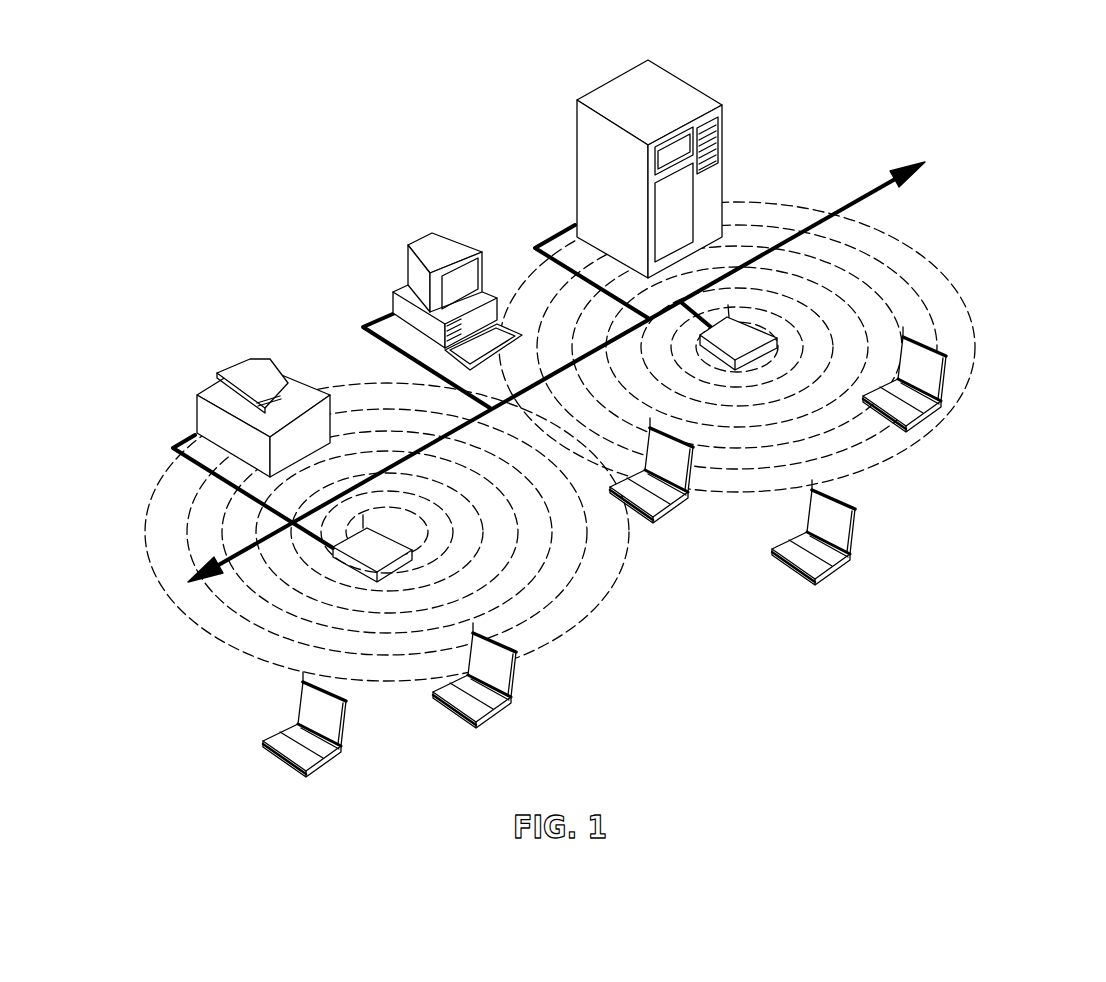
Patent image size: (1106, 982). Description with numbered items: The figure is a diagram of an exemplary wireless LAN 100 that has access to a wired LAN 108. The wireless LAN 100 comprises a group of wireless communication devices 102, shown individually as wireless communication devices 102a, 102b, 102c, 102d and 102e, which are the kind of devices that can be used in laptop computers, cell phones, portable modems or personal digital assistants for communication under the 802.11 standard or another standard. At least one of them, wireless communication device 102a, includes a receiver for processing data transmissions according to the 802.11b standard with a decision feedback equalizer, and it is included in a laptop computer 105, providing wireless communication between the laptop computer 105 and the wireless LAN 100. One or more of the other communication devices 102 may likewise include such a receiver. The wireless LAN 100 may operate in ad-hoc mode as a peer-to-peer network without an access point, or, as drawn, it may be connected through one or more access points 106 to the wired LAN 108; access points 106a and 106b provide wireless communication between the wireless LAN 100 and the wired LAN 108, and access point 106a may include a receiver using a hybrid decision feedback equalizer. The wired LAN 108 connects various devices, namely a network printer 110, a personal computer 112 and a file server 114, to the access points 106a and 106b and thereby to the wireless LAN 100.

The wireless LAN 100 is at (587, 434).
The wireless communication device 102 is at (643, 572).
The wireless communication device 102a is at (688, 495).
The wireless communication device 102b is at (515, 683).
The wireless communication device 102c is at (345, 725).
The wireless communication device 102d is at (834, 500).
The wireless communication device 102e is at (948, 382).
The laptop computer 105 is at (697, 468).
The access point 106 is at (587, 497).
The access point 106a is at (737, 322).
The access point 106b is at (253, 595).
The wired LAN 108 is at (362, 144).
The network printer 110 is at (210, 395).
The personal computer 112 is at (428, 238).
The file server 114 is at (622, 85).